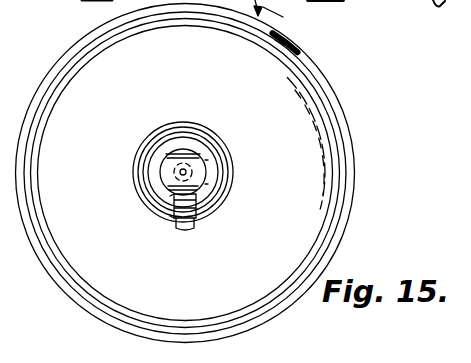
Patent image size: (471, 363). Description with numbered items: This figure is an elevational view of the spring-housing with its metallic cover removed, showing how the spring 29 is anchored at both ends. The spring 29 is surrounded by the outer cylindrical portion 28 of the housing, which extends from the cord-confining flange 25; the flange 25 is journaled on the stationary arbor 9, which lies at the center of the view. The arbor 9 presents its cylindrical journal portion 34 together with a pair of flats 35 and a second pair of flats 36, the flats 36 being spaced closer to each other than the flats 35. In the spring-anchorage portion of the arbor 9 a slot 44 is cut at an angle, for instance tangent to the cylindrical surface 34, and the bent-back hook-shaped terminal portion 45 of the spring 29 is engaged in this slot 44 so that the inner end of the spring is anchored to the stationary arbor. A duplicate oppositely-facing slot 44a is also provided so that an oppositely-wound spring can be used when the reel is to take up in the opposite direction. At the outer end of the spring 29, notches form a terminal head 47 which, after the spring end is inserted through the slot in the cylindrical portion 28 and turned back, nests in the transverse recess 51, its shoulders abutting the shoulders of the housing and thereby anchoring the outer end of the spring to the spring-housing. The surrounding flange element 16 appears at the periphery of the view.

The stationary arbor 9 is at (163, 172).
The reel flange 16 is at (318, 47).
The cord-confining flange 25 is at (303, 200).
The outer cylindrical portion 28 is at (339, 113).
The spring 29 is at (333, 152).
The cylindrical journal portion 34 is at (211, 168).
The pair of flats 35 is at (187, 149).
The pair of flats 36 is at (174, 155).
The slot 44 is at (215, 181).
The oppositely-facing slot 44a is at (172, 219).
The hook-shaped terminal portion 45 is at (193, 221).
The terminal head 47 is at (287, 45).
The recess 51 is at (293, 43).